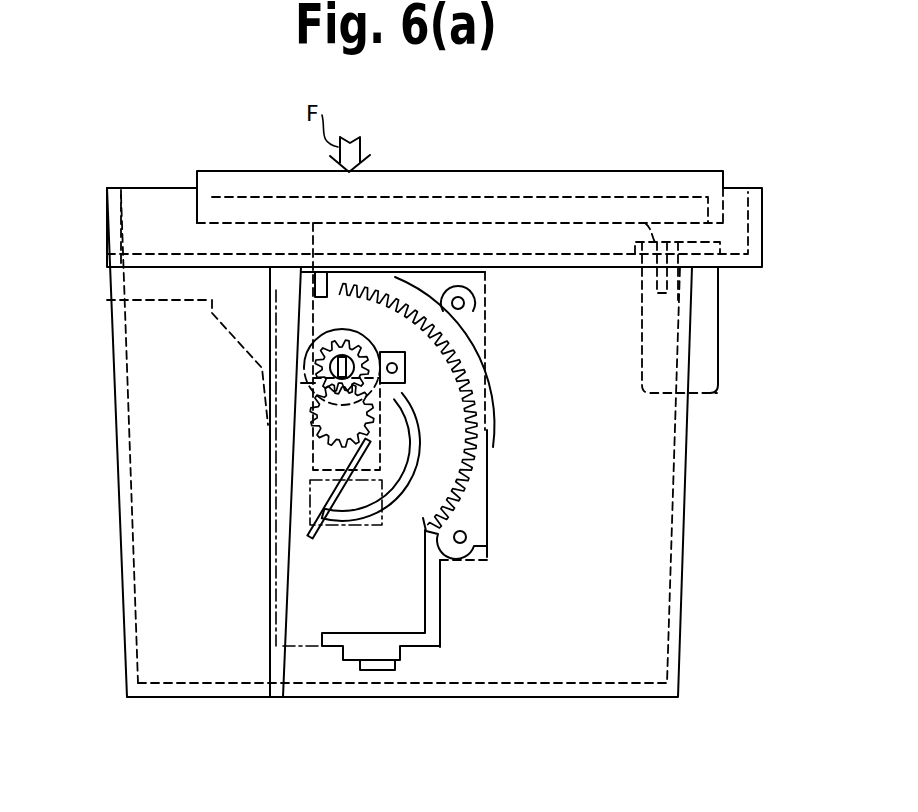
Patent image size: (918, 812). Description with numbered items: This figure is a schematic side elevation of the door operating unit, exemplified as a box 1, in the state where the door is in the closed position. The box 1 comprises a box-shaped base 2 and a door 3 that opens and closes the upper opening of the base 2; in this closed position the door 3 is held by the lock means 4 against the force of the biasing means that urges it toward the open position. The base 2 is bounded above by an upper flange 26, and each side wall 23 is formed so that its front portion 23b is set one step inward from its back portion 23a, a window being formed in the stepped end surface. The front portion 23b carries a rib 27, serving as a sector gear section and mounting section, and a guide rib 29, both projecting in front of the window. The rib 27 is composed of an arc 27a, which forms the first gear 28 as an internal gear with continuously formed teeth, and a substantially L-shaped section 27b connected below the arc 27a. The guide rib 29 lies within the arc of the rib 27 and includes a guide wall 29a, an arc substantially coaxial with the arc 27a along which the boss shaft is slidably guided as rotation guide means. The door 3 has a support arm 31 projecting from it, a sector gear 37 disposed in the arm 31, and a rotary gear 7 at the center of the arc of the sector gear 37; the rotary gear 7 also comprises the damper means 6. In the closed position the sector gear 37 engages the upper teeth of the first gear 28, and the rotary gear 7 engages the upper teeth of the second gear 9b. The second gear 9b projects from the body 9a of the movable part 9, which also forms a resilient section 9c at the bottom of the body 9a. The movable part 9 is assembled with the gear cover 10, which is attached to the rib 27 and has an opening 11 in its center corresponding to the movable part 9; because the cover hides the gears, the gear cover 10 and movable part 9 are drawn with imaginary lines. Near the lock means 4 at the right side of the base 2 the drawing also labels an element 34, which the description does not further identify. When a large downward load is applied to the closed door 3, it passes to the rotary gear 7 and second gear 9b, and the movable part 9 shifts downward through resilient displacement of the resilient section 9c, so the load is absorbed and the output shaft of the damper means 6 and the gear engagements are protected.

The box 1 is at (434, 173).
The box-shaped base 2 is at (745, 183).
The door 3 is at (717, 170).
The lock means 4 is at (710, 394).
The damper means 6 is at (327, 347).
The rotary gear 7 is at (292, 258).
The movable part 9 is at (212, 374).
The body 9a is at (315, 458).
The second gear 9b is at (310, 420).
The resilient section 9c is at (315, 487).
The gear cover 10 is at (262, 594).
The opening 11 is at (312, 512).
The side wall 23 is at (399, 474).
The back portion 23a is at (122, 442).
The front portion 23b is at (497, 668).
The upper flange 26 is at (149, 196).
The rib 27 is at (464, 482).
The arc 27a is at (488, 468).
The L-shaped section 27b is at (437, 603).
The first gear 28 is at (473, 388).
The guide rib 29 is at (415, 441).
The guide wall 29a is at (481, 457).
The support arm 31 is at (107, 303).
The guide rib 34 is at (678, 290).
The sector gear 37 is at (396, 366).